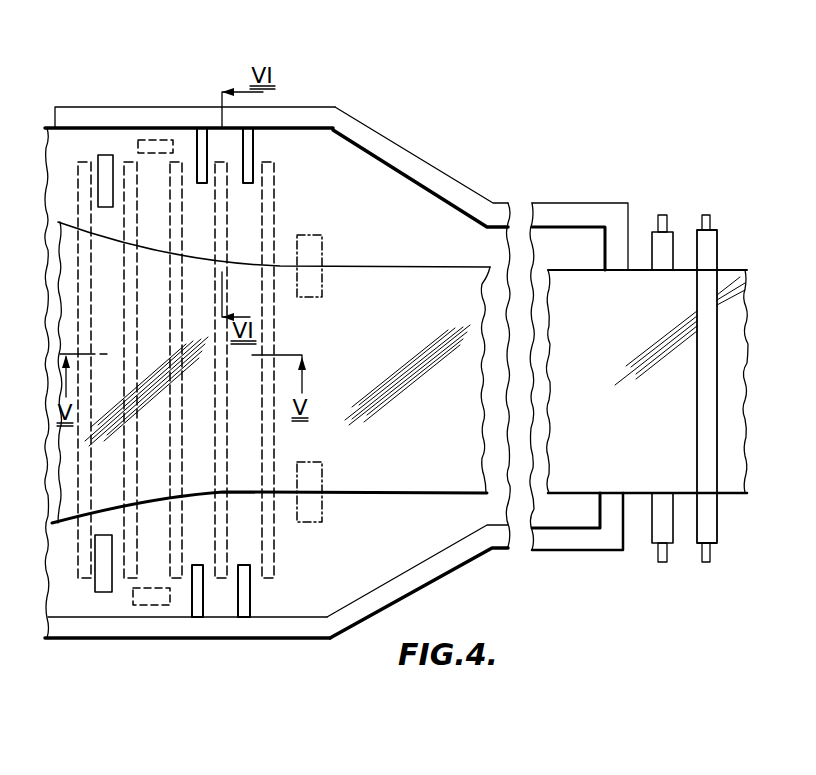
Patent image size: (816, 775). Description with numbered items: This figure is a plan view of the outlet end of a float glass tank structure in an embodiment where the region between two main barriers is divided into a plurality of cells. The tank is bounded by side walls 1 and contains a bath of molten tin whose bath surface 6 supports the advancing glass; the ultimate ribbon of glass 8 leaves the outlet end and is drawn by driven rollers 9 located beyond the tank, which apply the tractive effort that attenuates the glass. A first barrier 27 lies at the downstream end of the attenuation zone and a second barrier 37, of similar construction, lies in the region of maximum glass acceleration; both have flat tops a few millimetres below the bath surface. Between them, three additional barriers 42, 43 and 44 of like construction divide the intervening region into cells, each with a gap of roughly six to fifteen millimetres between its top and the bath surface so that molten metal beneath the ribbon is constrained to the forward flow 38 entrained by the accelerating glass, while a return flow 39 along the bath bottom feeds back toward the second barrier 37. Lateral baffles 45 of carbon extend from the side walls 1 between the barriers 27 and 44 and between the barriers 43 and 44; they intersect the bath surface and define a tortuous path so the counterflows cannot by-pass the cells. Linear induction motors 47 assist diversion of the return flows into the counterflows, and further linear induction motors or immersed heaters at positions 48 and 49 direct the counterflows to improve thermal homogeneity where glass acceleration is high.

The side walls 1 is at (313, 113).
The bath surface 6 is at (370, 177).
The ribbon of glass 8 is at (613, 317).
The driven rollers 9 is at (705, 248).
The first barrier 27 is at (273, 190).
The second barrier 37 is at (83, 160).
The forward flow 38 is at (443, 178).
The return flow 39 is at (585, 210).
The additional barrier 42 is at (128, 160).
The additional barrier 43 is at (182, 160).
The additional barrier 44 is at (225, 163).
The lateral baffles 45 is at (202, 128).
The linear induction motors 47 is at (320, 255).
The linear induction motor 48 is at (152, 140).
The linear induction motor 49 is at (100, 152).